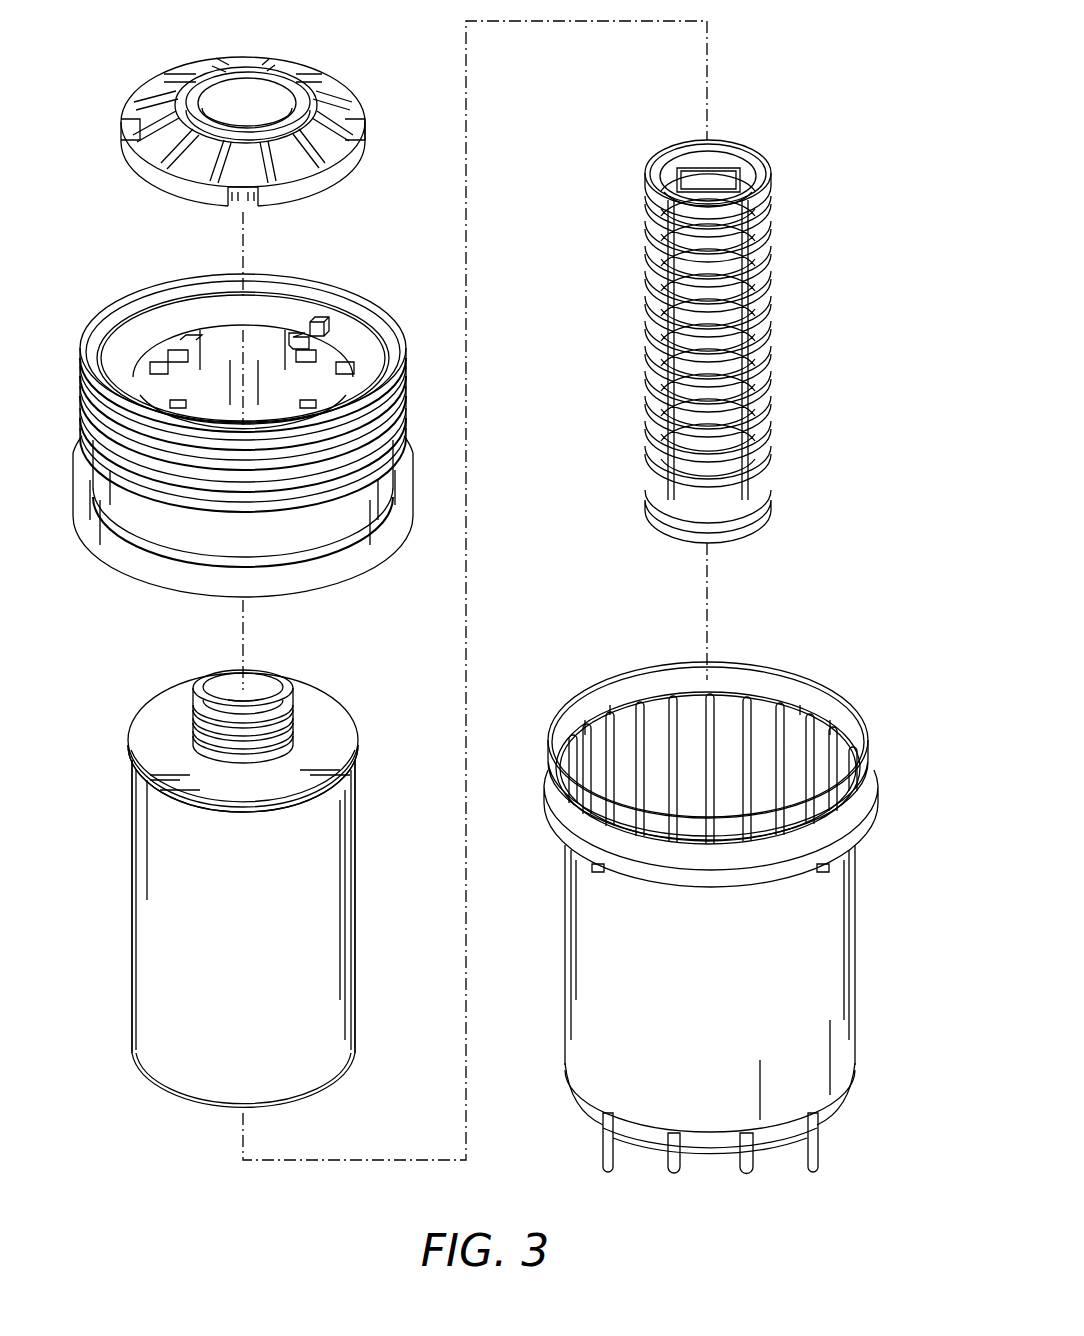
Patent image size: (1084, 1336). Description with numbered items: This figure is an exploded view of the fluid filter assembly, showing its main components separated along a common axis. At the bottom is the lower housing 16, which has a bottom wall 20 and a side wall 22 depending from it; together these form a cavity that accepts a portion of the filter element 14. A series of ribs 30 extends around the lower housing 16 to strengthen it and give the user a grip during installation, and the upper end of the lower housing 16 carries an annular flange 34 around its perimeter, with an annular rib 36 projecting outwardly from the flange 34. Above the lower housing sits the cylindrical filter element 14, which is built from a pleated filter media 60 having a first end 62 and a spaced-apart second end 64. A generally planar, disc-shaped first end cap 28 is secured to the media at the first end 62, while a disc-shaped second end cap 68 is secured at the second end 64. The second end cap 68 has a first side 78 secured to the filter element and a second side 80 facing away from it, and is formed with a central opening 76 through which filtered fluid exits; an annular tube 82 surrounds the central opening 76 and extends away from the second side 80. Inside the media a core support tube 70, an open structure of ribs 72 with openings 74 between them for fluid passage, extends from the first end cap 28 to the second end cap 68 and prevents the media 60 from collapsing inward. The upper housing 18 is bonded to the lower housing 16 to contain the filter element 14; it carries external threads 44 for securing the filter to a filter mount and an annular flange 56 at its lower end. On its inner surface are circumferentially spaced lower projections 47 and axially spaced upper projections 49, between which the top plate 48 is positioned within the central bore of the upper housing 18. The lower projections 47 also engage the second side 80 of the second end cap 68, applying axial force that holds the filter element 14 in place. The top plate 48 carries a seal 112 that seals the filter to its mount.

The filter element 14 is at (237, 880).
The lower housing 16 is at (752, 934).
The upper housing 18 is at (267, 433).
The bottom wall 20 is at (760, 1158).
The side wall 22 is at (823, 1023).
The first end cap 28 is at (303, 1110).
The ribs 30 is at (673, 1165).
The annular flange 34 is at (863, 822).
The annular rib 36 is at (860, 748).
The threads 44 is at (262, 397).
The lower projections 47 is at (298, 335).
The top plate 48 is at (280, 103).
The upper projections 49 is at (317, 320).
The annular flange 56 is at (352, 563).
The pleated filter media 60 is at (317, 1000).
The first end 62 is at (198, 1113).
The second end 64 is at (342, 810).
The second end cap 68 is at (251, 725).
The core support tube 70 is at (734, 341).
The ribs 72 is at (765, 380).
The openings 74 is at (707, 423).
The central opening 76 is at (252, 703).
The first side 78 is at (232, 810).
The second side 80 is at (168, 712).
The annular tube 82 is at (287, 683).
The seal 112 is at (290, 63).